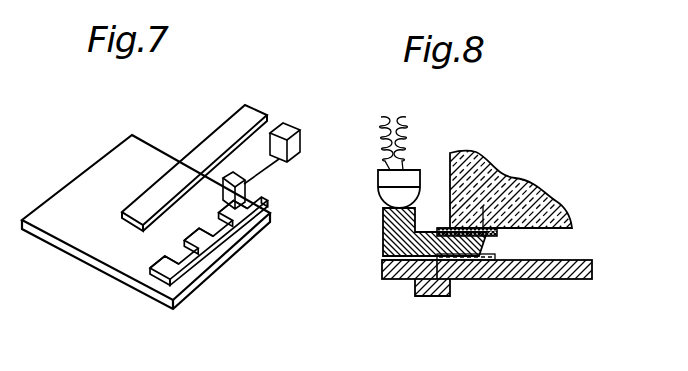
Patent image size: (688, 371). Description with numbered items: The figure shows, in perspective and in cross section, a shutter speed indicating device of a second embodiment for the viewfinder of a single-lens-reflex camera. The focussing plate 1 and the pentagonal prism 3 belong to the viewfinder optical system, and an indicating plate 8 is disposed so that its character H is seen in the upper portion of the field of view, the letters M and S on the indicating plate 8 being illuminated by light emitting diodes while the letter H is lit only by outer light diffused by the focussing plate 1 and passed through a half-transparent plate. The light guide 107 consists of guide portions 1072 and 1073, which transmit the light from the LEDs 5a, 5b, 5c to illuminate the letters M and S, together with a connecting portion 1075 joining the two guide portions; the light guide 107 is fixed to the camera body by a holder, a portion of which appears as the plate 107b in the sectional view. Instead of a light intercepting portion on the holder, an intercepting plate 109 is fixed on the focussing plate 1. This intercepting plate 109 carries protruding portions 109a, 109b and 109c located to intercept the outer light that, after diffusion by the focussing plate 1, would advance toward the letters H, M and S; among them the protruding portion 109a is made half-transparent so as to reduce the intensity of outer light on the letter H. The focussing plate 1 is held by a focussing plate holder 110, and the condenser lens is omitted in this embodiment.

In FIG. 7, the focussing plate 1 is at (82, 244).
In FIG. 8, the focussing plate 1 is at (561, 280).
In FIG. 7, the light guide 107 is at (264, 123).
In FIG. 7, the guide portion 1072 is at (248, 196).
In FIG. 8, the guide portion 1072 is at (434, 282).
In FIG. 7, the guide portion 1073 is at (298, 146).
In FIG. 8, the guide portion 1073 is at (384, 248).
In FIG. 7, the connecting portion 1075 is at (266, 176).
In FIG. 8, the mounting plate of scale strip 107b is at (498, 238).
In FIG. 7, the intercepting plate 109 is at (239, 274).
In FIG. 8, the intercepting plate 109 is at (468, 280).
In FIG. 7, the protruding portion 109a is at (163, 205).
In FIG. 7, the protruding portion 109b is at (203, 246).
In FIG. 7, the protruding portion 109c is at (246, 233).
In FIG. 8, the focussing plate holder 110 is at (428, 297).
In FIG. 8, the pentagonal prism 3 is at (520, 178).
In FIG. 8, the LED 5a is at (455, 161).
In FIG. 8, the LED 5b is at (455, 161).
In FIG. 8, the LED 5c is at (410, 166).
In FIG. 8, the indicating plate 8 is at (441, 228).